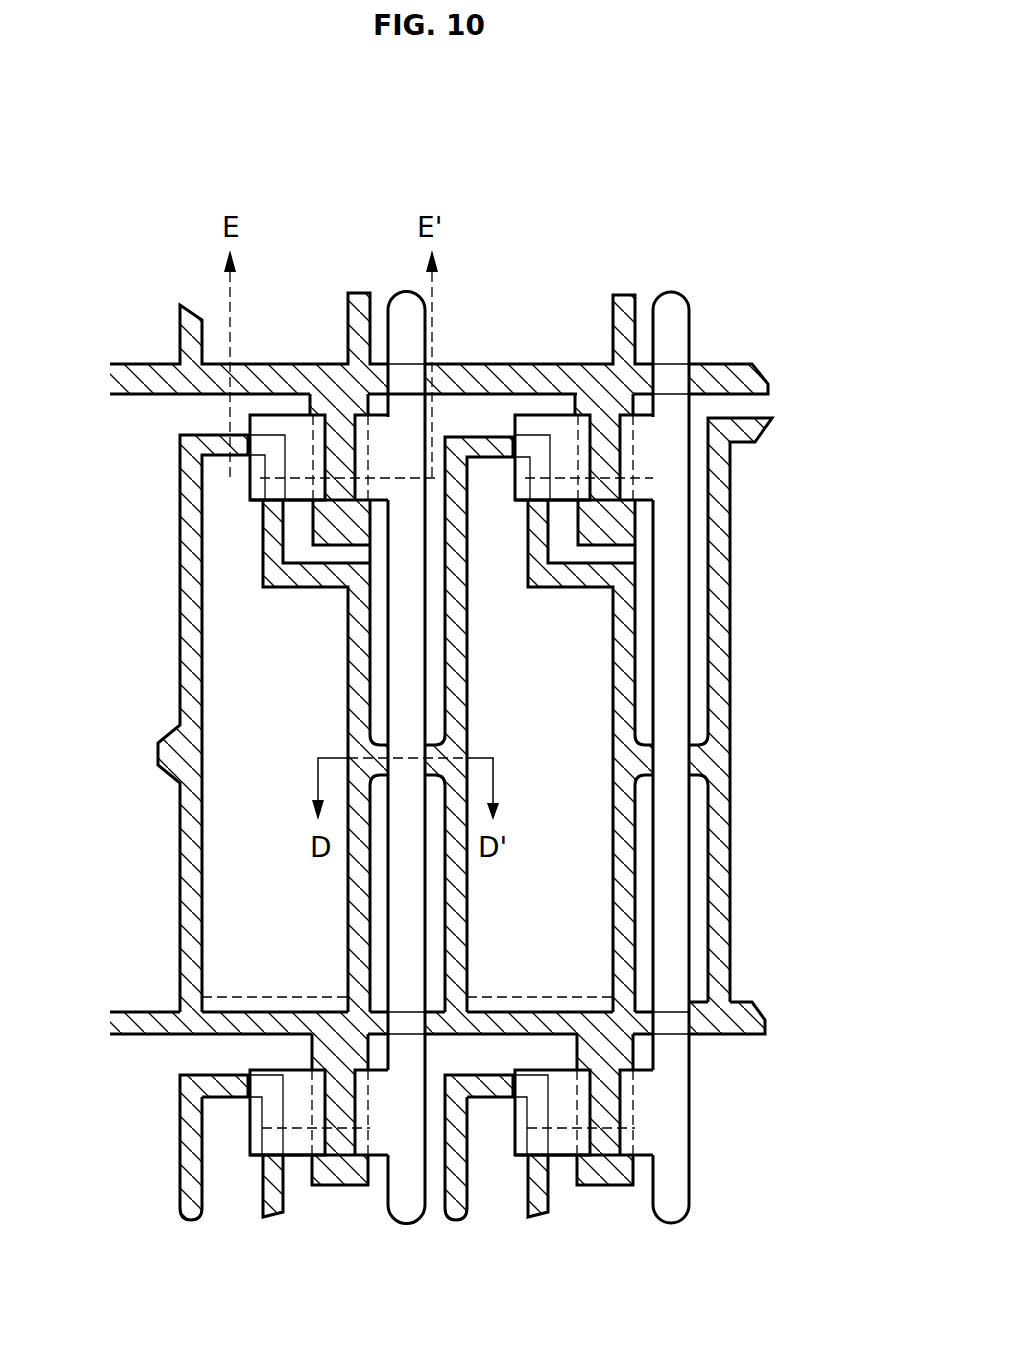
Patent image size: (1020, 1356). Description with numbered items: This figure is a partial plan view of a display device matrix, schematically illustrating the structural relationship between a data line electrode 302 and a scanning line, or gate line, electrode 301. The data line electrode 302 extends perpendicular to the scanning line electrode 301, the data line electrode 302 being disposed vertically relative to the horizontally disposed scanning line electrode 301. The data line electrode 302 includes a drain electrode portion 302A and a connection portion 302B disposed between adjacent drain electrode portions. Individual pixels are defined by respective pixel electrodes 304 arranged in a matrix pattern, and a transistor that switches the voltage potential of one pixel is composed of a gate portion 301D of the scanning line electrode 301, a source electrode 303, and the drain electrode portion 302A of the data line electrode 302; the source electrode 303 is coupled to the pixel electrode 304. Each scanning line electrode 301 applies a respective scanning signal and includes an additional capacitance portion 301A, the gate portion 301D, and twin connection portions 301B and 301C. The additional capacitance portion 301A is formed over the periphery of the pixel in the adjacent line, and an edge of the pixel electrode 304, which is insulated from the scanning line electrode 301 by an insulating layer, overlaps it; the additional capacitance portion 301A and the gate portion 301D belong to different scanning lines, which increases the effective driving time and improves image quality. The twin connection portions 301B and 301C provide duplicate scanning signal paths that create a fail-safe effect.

The scanning line electrode 301 is at (743, 1022).
The additional capacitance portion 301A is at (190, 875).
The connection portion 301B is at (433, 768).
The connection portion 301C is at (443, 988).
The gate portion 301D is at (335, 1183).
The data line electrode 302 is at (668, 308).
The drain electrode portion 302A is at (627, 488).
The connection portion 302B is at (673, 638).
The source electrode 303 is at (257, 487).
The pixel electrode 304 is at (218, 658).